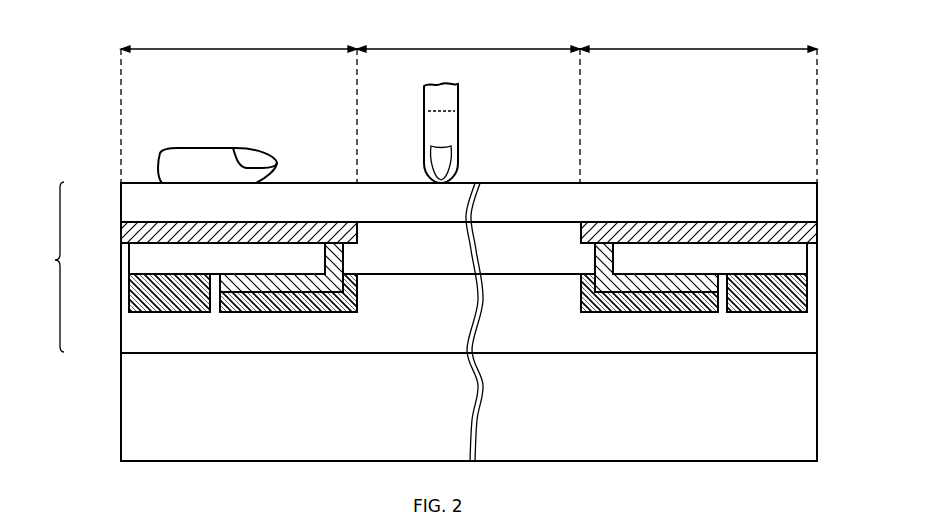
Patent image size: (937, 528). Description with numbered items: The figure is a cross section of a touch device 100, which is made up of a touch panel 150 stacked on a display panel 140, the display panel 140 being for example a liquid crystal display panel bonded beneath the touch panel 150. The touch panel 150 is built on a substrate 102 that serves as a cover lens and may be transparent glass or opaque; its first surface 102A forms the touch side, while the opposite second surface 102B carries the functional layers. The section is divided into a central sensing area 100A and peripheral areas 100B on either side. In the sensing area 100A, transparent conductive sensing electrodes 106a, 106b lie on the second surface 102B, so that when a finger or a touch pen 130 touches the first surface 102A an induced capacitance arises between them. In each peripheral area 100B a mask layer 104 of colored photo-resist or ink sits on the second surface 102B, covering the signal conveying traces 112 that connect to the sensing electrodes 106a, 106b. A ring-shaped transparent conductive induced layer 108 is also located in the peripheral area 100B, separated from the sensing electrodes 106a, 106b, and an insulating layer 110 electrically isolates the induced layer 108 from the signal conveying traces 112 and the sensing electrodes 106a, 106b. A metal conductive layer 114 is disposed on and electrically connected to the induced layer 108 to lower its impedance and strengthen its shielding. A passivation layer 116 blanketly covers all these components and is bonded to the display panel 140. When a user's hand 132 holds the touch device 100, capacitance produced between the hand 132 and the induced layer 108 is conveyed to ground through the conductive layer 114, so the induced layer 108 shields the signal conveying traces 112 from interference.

The touch device 100 is at (848, 118).
The sensing area 100A is at (468, 105).
The peripheral area 100B is at (469, 105).
The substrate 102 is at (808, 201).
The first surface 102A is at (800, 181).
The second surface 102B is at (800, 227).
The mask layer 104 is at (125, 229).
The sensing electrode 106a is at (385, 190).
The sensing electrode 106b is at (523, 190).
The induced layer 108 is at (139, 258).
The insulating layer 110 is at (247, 312).
The signal conveying traces 112 is at (303, 312).
The conductive layer 114 is at (133, 291).
The passivation layer 116 is at (808, 330).
The touch pen 130 is at (460, 95).
The hand 132 is at (197, 146).
The display panel 140 is at (808, 406).
The touch panel 150 is at (43, 267).